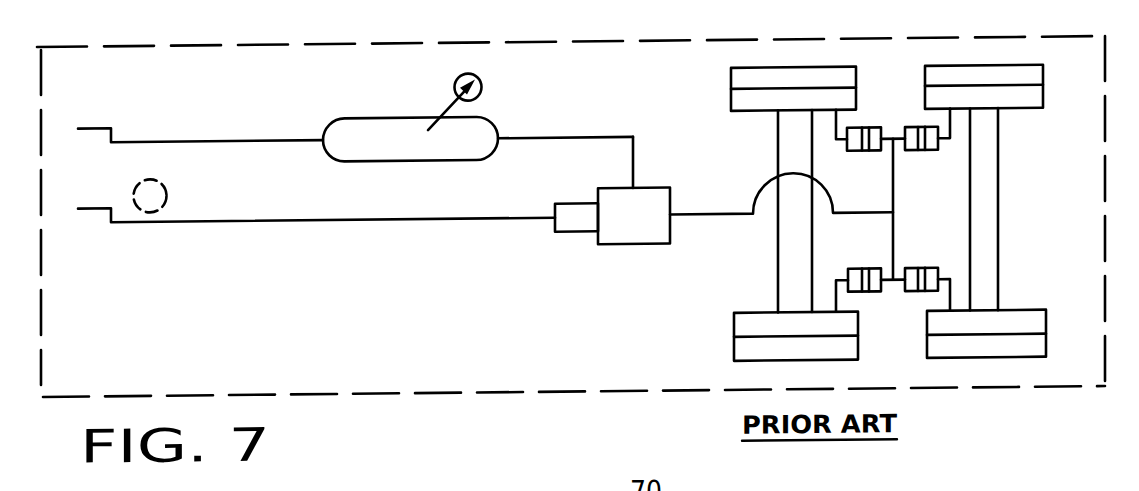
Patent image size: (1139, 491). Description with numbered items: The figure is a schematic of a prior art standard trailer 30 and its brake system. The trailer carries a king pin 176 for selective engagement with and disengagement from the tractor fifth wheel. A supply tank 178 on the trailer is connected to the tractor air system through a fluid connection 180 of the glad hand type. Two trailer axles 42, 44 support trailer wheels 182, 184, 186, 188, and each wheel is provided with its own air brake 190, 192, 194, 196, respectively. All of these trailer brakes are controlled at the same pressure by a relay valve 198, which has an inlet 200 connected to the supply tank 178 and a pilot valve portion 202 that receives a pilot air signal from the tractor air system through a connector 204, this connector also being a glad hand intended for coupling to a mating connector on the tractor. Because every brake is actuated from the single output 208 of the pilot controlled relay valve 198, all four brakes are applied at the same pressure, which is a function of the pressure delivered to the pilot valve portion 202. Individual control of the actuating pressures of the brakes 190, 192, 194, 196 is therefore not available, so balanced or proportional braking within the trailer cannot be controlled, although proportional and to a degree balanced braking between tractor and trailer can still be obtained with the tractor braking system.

The standard trailer 30 is at (500, 410).
The trailer axle 42 is at (712, 305).
The trailer axle 44 is at (1035, 252).
The king pin 176 is at (160, 188).
The supply tank 178 is at (388, 133).
The fluid connection 180 is at (113, 131).
The trailer wheel 182 is at (980, 83).
The trailer wheel 184 is at (1018, 357).
The trailer wheel 186 is at (785, 86).
The trailer wheel 188 is at (745, 356).
The air brake 190 is at (927, 160).
The air brake 192 is at (928, 277).
The air brake 194 is at (853, 160).
The air brake 196 is at (869, 277).
The relay valve 198 is at (622, 204).
The inlet 200 is at (636, 171).
The pilot valve portion 202 is at (568, 237).
The connector 204 is at (103, 213).
The single output 208 is at (689, 223).